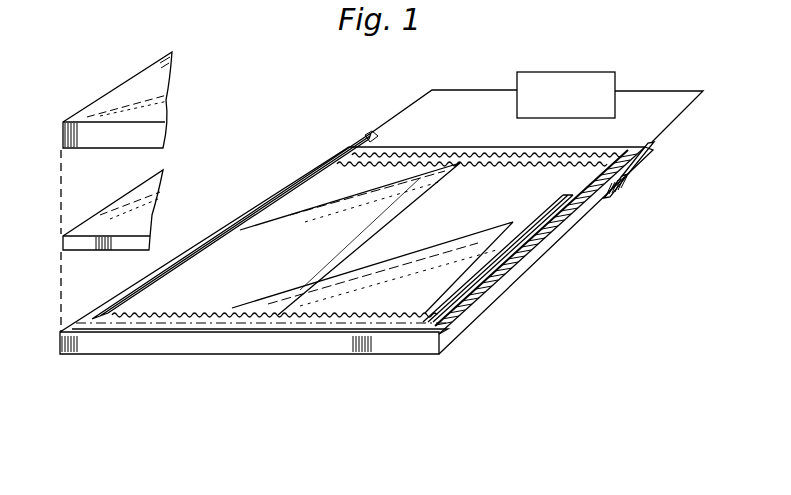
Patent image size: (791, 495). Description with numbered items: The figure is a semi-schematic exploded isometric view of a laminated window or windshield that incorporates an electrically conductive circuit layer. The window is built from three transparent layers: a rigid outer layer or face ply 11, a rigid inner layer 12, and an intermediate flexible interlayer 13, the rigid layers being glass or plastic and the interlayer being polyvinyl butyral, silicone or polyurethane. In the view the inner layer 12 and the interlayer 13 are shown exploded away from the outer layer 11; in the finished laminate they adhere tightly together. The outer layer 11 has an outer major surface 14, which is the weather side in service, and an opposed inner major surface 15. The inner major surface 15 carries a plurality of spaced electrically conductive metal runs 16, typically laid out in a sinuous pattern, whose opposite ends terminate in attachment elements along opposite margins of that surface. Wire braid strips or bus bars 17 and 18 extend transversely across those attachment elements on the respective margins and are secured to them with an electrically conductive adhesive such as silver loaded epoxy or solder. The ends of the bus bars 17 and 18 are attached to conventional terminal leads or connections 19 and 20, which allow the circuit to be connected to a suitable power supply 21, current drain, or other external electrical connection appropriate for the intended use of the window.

The rigid outer layer 11 is at (503, 290).
The rigid inner layer 12 is at (173, 90).
The intermediate flexible interlayer 13 is at (110, 220).
The outer major surface 14 is at (352, 354).
The inner major surface 15 is at (243, 322).
The electrically conductive metal runs 16 is at (380, 167).
The bus bar 17 is at (282, 202).
The bus bar 18 is at (588, 197).
The terminal lead 19 is at (385, 122).
The terminal lead 20 is at (656, 141).
The power supply 21 is at (576, 72).